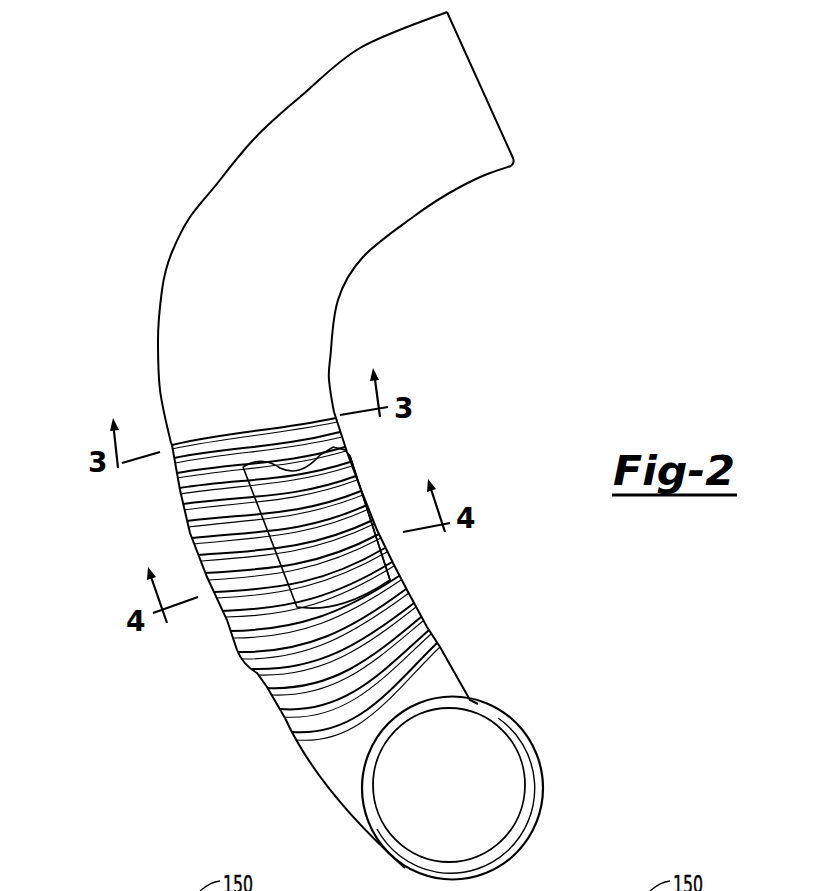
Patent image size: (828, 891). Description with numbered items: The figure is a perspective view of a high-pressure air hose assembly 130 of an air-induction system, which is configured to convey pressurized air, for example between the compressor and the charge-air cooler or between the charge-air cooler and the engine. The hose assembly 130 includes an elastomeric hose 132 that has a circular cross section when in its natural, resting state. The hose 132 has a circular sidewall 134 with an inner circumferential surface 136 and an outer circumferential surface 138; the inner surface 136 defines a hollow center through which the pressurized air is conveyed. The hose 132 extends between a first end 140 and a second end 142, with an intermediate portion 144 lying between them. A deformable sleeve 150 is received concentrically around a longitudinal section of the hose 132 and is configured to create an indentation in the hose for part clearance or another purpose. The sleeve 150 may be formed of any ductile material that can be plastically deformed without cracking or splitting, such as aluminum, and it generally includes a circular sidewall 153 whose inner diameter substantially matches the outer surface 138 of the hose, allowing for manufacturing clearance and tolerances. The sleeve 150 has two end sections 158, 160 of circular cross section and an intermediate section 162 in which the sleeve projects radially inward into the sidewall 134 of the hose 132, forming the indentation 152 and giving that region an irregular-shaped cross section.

The high-pressure air hose assembly 130 is at (660, 96).
The elastomeric hose 132 is at (358, 48).
The circular sidewall 134 is at (340, 237).
The inner circumferential surface 136 is at (505, 832).
The outer circumferential surface 138 is at (448, 172).
The first end 140 is at (490, 82).
The second end 142 is at (510, 727).
The intermediate portion 144 is at (240, 238).
The deformable sleeve 150 is at (185, 552).
The indentation 152 is at (327, 497).
The circular sidewall 153 is at (273, 690).
The end section 158 is at (190, 435).
The end section 160 is at (300, 723).
The intermediate section 162 is at (418, 565).